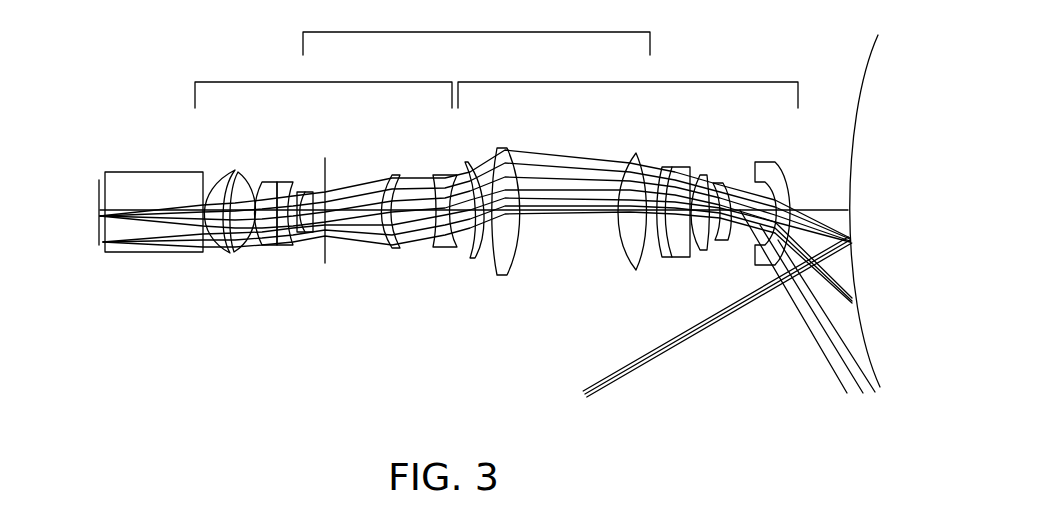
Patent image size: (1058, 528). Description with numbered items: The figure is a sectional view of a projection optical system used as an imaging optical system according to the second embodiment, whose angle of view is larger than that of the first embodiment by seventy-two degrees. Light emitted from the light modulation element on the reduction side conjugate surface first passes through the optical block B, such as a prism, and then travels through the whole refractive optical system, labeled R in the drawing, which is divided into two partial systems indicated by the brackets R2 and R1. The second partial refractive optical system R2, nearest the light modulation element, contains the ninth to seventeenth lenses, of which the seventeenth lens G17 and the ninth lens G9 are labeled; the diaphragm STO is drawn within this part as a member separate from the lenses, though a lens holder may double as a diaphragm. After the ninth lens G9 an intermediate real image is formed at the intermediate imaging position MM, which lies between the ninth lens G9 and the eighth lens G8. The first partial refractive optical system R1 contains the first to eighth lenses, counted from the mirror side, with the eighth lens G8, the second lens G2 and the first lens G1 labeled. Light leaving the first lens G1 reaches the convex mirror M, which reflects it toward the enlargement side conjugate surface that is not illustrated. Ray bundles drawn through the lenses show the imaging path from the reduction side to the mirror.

The optical system R is at (476, 29).
The first lens group R1 is at (628, 83).
The second lens group R2 is at (323, 83).
The first lens G1 is at (760, 161).
The second lens G2 is at (720, 183).
The eighth lens G8 is at (466, 160).
The ninth lens G9 is at (433, 176).
The seventeenth lens G17 is at (222, 168).
The diaphragm STO is at (325, 264).
The intermediate imaging position MM is at (462, 246).
The convex mirror M is at (874, 66).
The optical block B is at (147, 252).